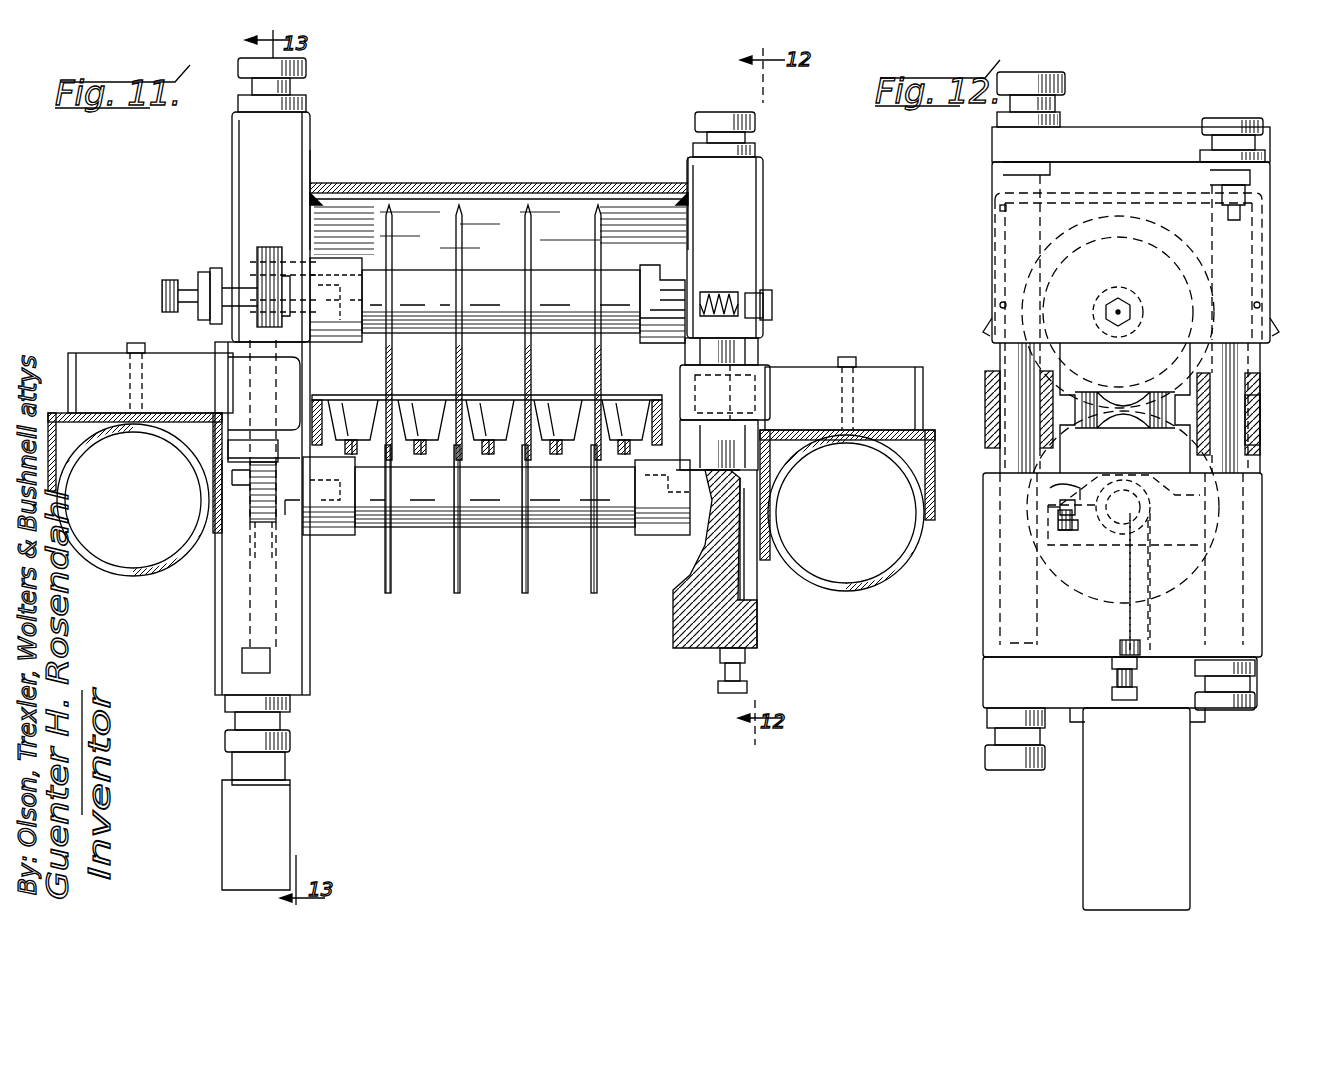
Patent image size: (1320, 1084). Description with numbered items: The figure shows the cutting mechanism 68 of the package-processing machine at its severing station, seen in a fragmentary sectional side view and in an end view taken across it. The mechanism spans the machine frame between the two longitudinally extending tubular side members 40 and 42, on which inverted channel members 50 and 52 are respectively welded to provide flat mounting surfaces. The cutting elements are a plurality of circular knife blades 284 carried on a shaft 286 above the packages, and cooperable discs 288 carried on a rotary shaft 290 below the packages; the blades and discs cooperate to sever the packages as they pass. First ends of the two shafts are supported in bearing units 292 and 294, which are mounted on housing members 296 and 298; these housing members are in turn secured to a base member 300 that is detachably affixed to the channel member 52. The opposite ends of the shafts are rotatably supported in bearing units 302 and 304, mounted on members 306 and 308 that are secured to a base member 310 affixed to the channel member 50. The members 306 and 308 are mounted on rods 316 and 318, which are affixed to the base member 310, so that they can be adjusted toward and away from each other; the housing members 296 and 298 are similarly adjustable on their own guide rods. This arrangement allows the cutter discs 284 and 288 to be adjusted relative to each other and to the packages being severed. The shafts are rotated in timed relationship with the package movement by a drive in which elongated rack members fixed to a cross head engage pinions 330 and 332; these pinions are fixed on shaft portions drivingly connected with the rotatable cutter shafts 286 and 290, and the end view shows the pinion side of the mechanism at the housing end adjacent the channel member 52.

In FIG. 11, the side member 40 is at (868, 590).
In FIG. 11, the side member 42 is at (108, 560).
In FIG. 11, the channel member 50 is at (932, 435).
In FIG. 11, the channel member 52 is at (60, 410).
In FIG. 11, the cutting mechanism 68 is at (780, 235).
In FIG. 11, the circular knife blades 284 is at (515, 228).
In FIG. 12, the circular knife blades 284 is at (1025, 276).
In FIG. 11, the shaft 286 is at (565, 282).
In FIG. 11, the cooperable discs 288 is at (392, 570).
In FIG. 12, the cooperable discs 288 is at (1088, 598).
In FIG. 11, the rotary shaft 290 is at (497, 522).
In FIG. 11, the bearing unit 292 is at (333, 265).
In FIG. 11, the bearing unit 294 is at (328, 527).
In FIG. 11, the housing member 296 is at (235, 186).
In FIG. 11, the housing member 298 is at (218, 610).
In FIG. 11, the base member 300 is at (112, 375).
In FIG. 11, the bearing unit 302 is at (666, 265).
In FIG. 11, the bearing unit 304 is at (652, 537).
In FIG. 11, the member 306 is at (757, 270).
In FIG. 12, the member 306 is at (1000, 187).
In FIG. 11, the member 308 is at (757, 612).
In FIG. 12, the member 308 is at (987, 632).
In FIG. 11, the base member 310 is at (806, 382).
In FIG. 12, the base member 310 is at (1250, 420).
In FIG. 12, the rod 316 is at (1020, 358).
In FIG. 12, the rod 318 is at (1232, 362).
In FIG. 11, the pinion 330 is at (258, 272).
In FIG. 11, the pinion 332 is at (255, 508).